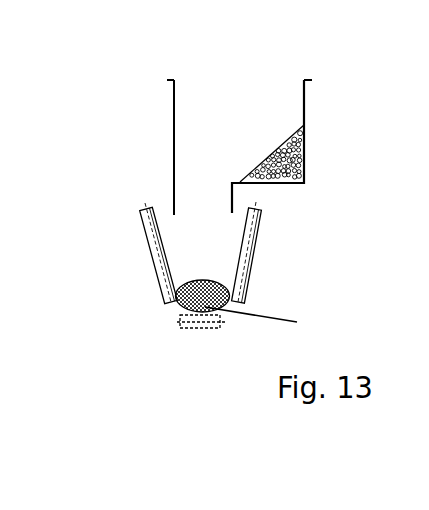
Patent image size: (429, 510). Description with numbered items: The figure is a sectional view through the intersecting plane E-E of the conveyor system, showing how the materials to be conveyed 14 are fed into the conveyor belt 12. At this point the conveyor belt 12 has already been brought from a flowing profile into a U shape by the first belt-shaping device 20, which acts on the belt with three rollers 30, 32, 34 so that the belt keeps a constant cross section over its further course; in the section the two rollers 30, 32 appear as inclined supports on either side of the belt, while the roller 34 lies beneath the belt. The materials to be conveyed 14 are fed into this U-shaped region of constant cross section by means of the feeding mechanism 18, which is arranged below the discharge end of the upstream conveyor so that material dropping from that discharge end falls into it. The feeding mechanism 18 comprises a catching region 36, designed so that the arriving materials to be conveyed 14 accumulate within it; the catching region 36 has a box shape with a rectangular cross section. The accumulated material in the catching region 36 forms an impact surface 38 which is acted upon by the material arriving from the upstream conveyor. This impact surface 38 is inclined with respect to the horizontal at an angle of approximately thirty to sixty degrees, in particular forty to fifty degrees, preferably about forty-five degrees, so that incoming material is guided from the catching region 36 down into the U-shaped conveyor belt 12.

The conveyor belt 12 is at (180, 307).
The materials to be conveyed 14 is at (272, 323).
The feeding mechanism 18 is at (182, 100).
The first belt-shaping device 20 is at (181, 248).
The roller 30 is at (148, 245).
The roller 32 is at (252, 245).
The roller 34 is at (205, 329).
The catching region 36 is at (305, 168).
The impact surface 38 is at (292, 131).